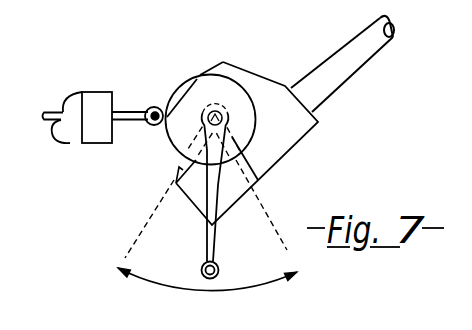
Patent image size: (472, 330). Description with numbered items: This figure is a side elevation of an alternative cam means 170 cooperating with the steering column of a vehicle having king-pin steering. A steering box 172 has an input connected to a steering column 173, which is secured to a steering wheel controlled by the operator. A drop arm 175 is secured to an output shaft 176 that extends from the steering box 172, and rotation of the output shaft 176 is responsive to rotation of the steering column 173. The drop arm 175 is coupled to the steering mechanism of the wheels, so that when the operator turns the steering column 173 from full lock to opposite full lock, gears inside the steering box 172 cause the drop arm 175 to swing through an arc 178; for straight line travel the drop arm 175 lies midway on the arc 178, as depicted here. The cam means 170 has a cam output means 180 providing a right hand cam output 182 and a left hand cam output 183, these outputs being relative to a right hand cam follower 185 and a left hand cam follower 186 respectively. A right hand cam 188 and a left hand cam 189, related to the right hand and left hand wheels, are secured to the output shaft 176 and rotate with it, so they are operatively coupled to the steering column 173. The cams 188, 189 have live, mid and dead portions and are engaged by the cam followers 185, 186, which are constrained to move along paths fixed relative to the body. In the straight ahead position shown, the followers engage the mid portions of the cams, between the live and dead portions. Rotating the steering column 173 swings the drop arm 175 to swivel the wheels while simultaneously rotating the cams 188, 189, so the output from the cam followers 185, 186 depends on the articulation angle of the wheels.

The cam means 170 is at (202, 64).
The steering box 172 is at (238, 78).
The steering column 173 is at (359, 53).
The drop arm 175 is at (209, 243).
The output shaft 176 is at (204, 109).
The arc 178 is at (179, 288).
The cam output means 180 is at (79, 101).
The right hand cam output 182 is at (60, 141).
The left hand cam output 183 is at (46, 119).
The right hand cam follower 185 is at (112, 91).
The left hand cam follower 186 is at (151, 106).
The right hand cam 188 is at (173, 142).
The left hand cam 189 is at (178, 156).